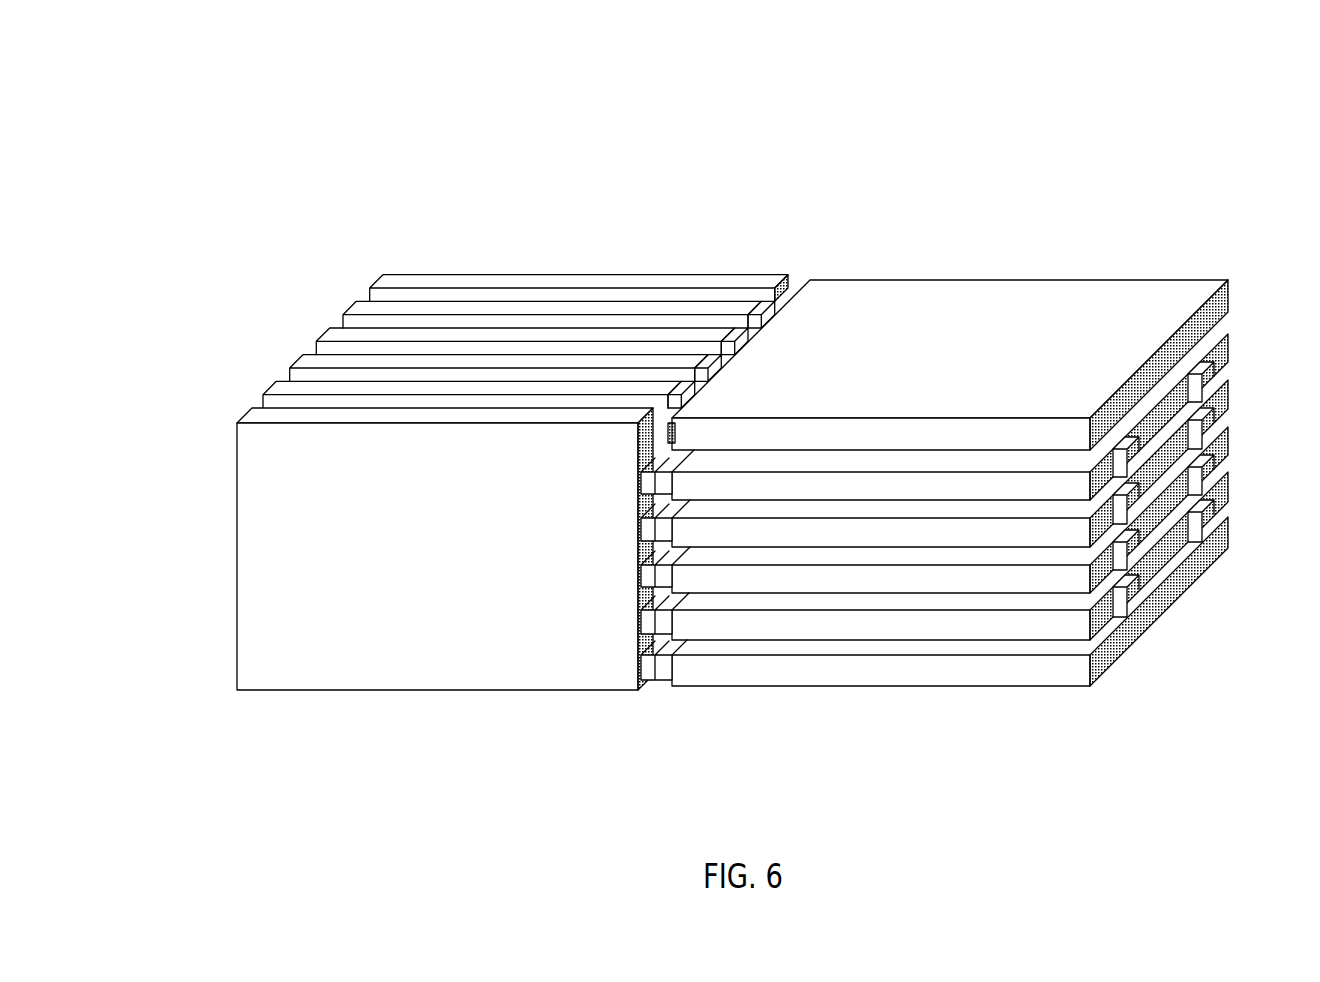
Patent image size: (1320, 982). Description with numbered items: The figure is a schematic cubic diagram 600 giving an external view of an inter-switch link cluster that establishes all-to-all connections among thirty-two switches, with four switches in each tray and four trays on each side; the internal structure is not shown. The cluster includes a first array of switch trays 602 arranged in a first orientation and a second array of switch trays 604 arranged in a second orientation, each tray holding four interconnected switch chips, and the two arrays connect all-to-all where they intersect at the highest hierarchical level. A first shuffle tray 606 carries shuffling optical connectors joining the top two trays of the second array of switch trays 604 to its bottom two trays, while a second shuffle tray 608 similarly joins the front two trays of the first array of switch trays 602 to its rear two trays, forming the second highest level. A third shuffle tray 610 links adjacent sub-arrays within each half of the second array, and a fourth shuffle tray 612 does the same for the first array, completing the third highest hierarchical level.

The schematic cubic diagram 600 is at (1195, 71).
The first array of switch trays 602 is at (349, 296).
The second array of switch trays 604 is at (1237, 332).
The first shuffle tray 606 is at (253, 420).
The second shuffle tray 608 is at (1085, 305).
The third shuffle tray 610 is at (382, 294).
The fourth shuffle tray 612 is at (833, 672).